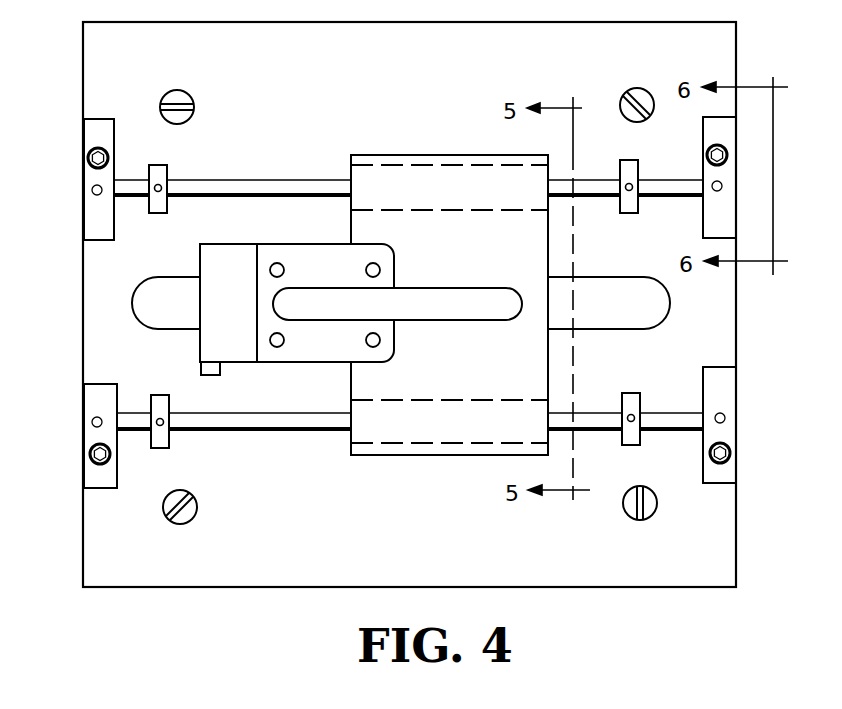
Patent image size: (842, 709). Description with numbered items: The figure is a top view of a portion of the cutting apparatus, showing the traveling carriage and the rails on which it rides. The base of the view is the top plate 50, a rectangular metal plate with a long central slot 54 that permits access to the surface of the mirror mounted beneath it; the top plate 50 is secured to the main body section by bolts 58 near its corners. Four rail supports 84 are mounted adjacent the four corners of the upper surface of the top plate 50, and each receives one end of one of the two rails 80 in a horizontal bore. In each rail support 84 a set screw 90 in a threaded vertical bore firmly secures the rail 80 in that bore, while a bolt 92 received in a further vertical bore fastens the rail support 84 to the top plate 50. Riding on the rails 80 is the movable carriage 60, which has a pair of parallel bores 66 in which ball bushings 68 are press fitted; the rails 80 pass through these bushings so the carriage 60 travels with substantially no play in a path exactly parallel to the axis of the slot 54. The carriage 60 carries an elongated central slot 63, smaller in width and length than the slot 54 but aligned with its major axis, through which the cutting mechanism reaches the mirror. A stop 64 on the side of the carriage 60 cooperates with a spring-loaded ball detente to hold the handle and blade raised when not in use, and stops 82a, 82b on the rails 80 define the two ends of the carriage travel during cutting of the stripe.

The top plate 50 is at (276, 65).
The central slot 54 is at (618, 310).
The bolts 58 is at (177, 90).
The carriage 60 is at (420, 141).
The central slot 63 is at (468, 300).
The stop 64 is at (200, 369).
The parallel bores 66 is at (480, 183).
The ball bushings 68 is at (350, 210).
The rails 80 is at (290, 180).
The stop 82a is at (167, 172).
The stop 82b is at (632, 164).
The rail supports 84 is at (96, 216).
The set screw 90 is at (92, 190).
The bolt 92 is at (88, 158).